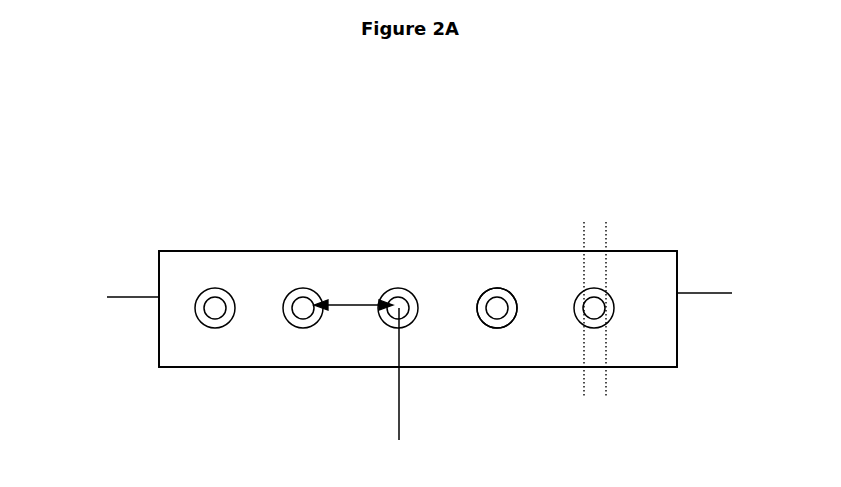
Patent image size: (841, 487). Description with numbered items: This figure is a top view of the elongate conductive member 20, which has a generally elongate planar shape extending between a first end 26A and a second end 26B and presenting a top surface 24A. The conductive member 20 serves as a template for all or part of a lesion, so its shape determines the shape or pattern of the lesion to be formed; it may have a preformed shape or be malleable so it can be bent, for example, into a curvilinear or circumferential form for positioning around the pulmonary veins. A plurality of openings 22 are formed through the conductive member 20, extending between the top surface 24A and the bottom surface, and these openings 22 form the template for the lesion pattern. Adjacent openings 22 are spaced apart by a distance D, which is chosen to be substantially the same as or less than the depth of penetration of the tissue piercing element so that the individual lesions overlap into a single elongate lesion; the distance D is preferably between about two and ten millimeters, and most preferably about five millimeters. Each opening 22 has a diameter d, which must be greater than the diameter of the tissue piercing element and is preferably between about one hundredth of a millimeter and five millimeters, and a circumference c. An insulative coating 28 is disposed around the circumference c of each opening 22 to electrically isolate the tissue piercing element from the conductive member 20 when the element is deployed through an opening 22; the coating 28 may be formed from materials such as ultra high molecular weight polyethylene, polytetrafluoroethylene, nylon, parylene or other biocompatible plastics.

The elongate conductive member 20 is at (163, 157).
The openings 22 is at (216, 308).
The top surface 24A is at (258, 278).
The first end 26A is at (111, 300).
The second end 26B is at (725, 295).
The insulative coating 28 is at (498, 290).
The distance D is at (353, 297).
The circumference c is at (398, 387).
The diameter d is at (594, 304).